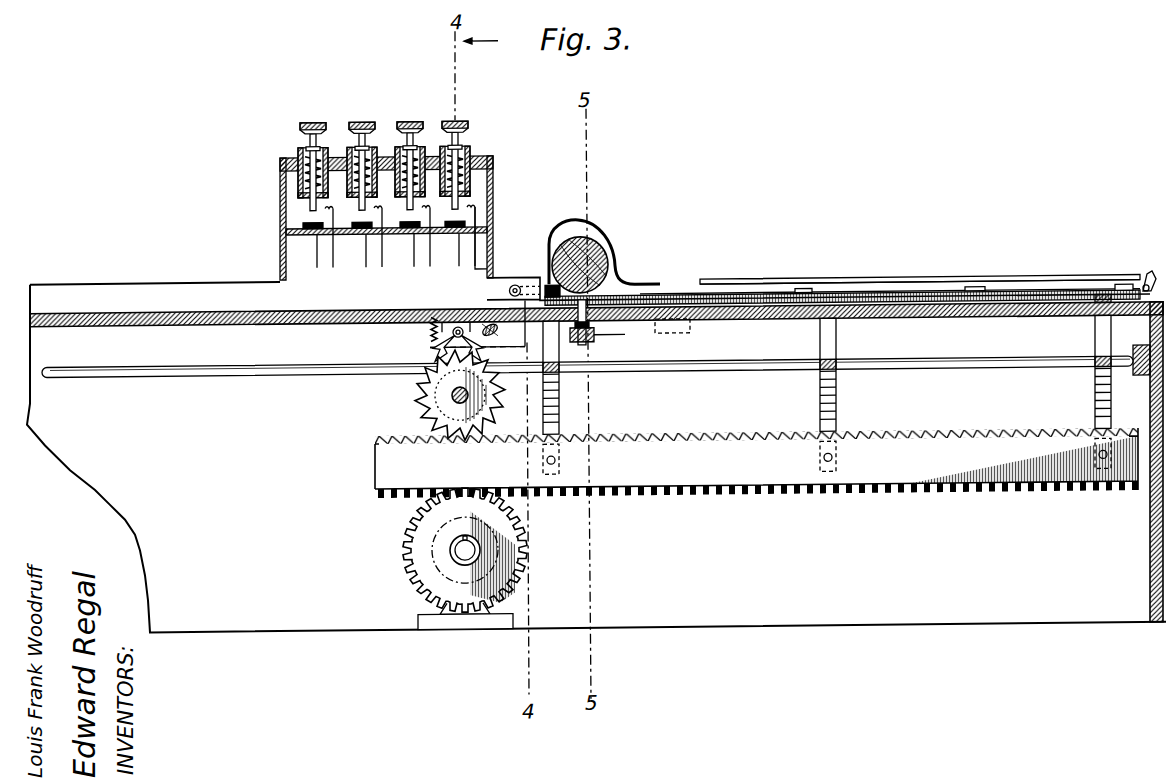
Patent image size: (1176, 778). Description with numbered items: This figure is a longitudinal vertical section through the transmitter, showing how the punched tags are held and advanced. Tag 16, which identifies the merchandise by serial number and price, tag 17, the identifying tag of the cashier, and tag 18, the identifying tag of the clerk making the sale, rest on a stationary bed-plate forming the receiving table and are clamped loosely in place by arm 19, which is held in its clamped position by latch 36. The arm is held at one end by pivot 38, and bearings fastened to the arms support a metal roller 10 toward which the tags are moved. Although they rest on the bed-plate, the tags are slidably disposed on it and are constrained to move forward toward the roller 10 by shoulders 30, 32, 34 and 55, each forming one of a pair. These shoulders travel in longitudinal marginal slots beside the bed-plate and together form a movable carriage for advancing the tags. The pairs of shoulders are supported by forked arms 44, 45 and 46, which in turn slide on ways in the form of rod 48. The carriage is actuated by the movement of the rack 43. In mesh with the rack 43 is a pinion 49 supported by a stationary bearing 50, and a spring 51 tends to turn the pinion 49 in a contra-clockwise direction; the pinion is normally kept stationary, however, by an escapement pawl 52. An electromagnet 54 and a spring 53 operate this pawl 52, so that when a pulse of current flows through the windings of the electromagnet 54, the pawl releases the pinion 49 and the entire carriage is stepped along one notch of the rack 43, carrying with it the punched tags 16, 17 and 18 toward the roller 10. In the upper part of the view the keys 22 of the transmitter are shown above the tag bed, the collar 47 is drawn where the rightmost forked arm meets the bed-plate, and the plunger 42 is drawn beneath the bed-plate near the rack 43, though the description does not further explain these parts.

The push button key 22 is at (305, 126).
The shoulder 30 is at (549, 289).
The pivot 38 is at (515, 290).
The metal roller 10 is at (602, 262).
The tag 16 is at (692, 301).
The shoulder 32 is at (804, 297).
The tag 17 is at (888, 301).
The arm 19 is at (935, 297).
The shoulder 34 is at (975, 297).
The tag 18 is at (1030, 300).
The post collar 47 is at (1096, 306).
The shoulder 55 is at (1122, 296).
The latch 36 is at (1147, 285).
The escapement pawl 52 is at (440, 320).
The spring 53 is at (428, 344).
The electromagnet 54 is at (498, 337).
The spring plunger 42 is at (690, 339).
The spring 51 is at (425, 389).
The stationary bearing 50 is at (452, 402).
The pinion 49 is at (425, 424).
The rod 48 is at (1040, 369).
The forked arm 44 is at (560, 408).
The forked arm 45 is at (820, 400).
The forked arm 46 is at (1095, 406).
The rack 43 is at (756, 463).